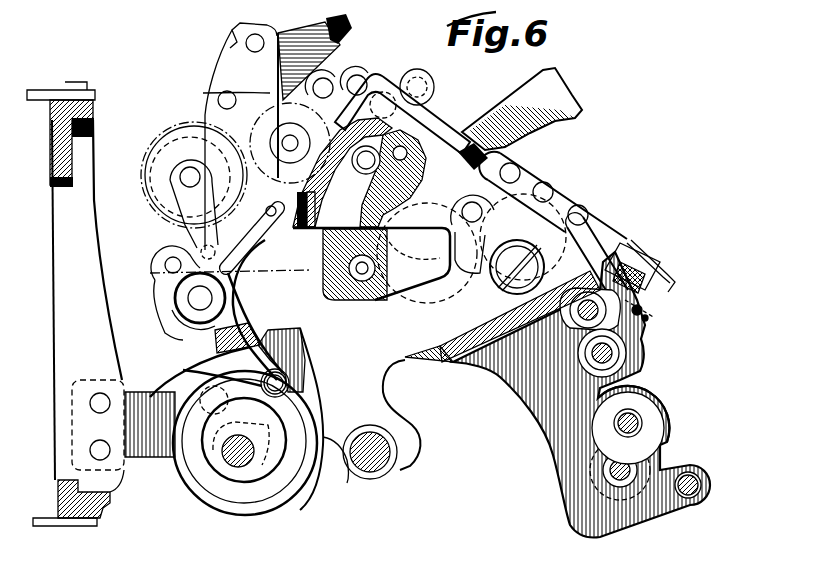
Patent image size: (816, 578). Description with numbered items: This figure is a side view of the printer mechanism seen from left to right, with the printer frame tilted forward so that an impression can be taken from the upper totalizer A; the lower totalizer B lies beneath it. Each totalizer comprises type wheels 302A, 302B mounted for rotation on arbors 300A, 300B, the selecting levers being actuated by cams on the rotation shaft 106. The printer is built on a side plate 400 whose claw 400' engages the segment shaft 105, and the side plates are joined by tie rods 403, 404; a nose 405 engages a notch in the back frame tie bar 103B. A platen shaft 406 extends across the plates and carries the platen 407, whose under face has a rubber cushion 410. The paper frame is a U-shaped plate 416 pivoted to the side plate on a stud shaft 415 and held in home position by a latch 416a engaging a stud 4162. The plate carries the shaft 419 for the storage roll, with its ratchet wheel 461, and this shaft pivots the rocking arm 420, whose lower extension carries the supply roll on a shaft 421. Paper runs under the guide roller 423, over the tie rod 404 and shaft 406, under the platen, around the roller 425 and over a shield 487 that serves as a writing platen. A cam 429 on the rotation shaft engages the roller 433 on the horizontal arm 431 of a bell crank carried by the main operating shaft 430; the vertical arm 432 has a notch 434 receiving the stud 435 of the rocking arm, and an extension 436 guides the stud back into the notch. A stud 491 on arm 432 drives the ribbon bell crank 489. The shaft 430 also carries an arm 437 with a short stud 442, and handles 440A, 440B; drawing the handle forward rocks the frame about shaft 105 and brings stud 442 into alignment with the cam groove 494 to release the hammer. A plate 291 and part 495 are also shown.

The tie bar 103B is at (98, 110).
The segment shaft 105 is at (380, 452).
The rotation shaft 106 is at (255, 458).
The support plate 291 is at (500, 378).
The arbor 300A is at (640, 357).
The arbor 300B is at (634, 422).
The type wheels 302A is at (623, 247).
The type wheels 302B is at (654, 397).
The side plate 400 is at (226, 140).
The claw 400' is at (388, 421).
The tie rod 403 is at (170, 265).
The tie rod 404 is at (510, 163).
The nose 405 is at (235, 34).
The platen shaft 406 is at (515, 180).
The platen 407 is at (652, 275).
The rubber cushion 410 is at (652, 293).
The stud shaft 415 is at (475, 318).
The U-shaped plate 416 is at (432, 362).
The latch 416a is at (292, 330).
The stud 4162 is at (359, 172).
The shaft 419 is at (272, 120).
The rocking arm 420 is at (433, 90).
The shaft 421 is at (255, 128).
The guide roller 423 is at (371, 279).
The roller 425 is at (647, 320).
The cam 429 is at (310, 428).
The main operating shaft 430 is at (203, 299).
The horizontal arm 431 is at (230, 299).
The vertically extending arm 432 is at (247, 115).
The roller 433 is at (290, 345).
The notch 434 is at (356, 75).
The stud 435 is at (358, 77).
The extension 436 is at (440, 112).
The arm 437 is at (165, 224).
The handle 440A is at (495, 153).
The lock 440B is at (338, 42).
The short stud 442 is at (381, 264).
The ratchet wheel 461 is at (238, 78).
The shield 487 is at (650, 262).
The bell crank 489 is at (427, 267).
The stud 491 is at (252, 238).
The cam groove 494 is at (452, 234).
The screw 495 is at (523, 244).
The totalizer A is at (641, 350).
The totalizer B is at (660, 437).